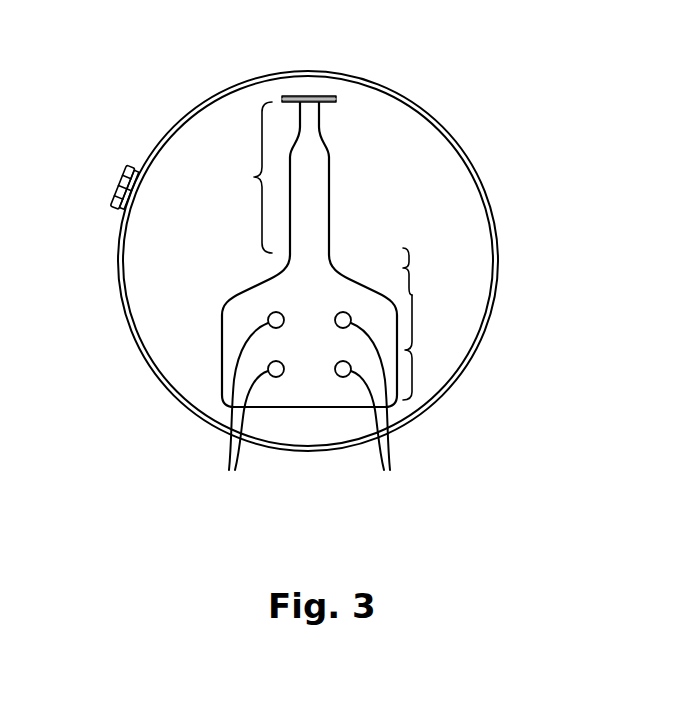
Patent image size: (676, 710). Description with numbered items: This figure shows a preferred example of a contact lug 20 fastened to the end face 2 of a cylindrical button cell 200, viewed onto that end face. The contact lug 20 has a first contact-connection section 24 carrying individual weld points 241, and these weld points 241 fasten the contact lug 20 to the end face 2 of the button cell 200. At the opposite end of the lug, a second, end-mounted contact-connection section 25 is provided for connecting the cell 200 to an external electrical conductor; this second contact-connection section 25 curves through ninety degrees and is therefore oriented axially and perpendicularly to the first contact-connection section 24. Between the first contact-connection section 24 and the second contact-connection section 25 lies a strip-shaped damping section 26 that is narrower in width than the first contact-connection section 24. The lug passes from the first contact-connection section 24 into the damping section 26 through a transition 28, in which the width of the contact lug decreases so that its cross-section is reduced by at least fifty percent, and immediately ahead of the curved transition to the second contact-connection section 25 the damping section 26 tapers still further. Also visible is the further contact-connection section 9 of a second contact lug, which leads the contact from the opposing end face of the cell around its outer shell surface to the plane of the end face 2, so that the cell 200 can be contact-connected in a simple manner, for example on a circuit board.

The end face 2 is at (455, 210).
The further contact-connection section 9 is at (119, 185).
The contact lug 20 is at (337, 220).
The first contact-connection section 24 is at (405, 350).
The second contact-connection section 25 is at (312, 96).
The damping section 26 is at (254, 177).
The transition 28 is at (403, 268).
The button cell 200 is at (168, 85).
The weld points 241 is at (312, 404).